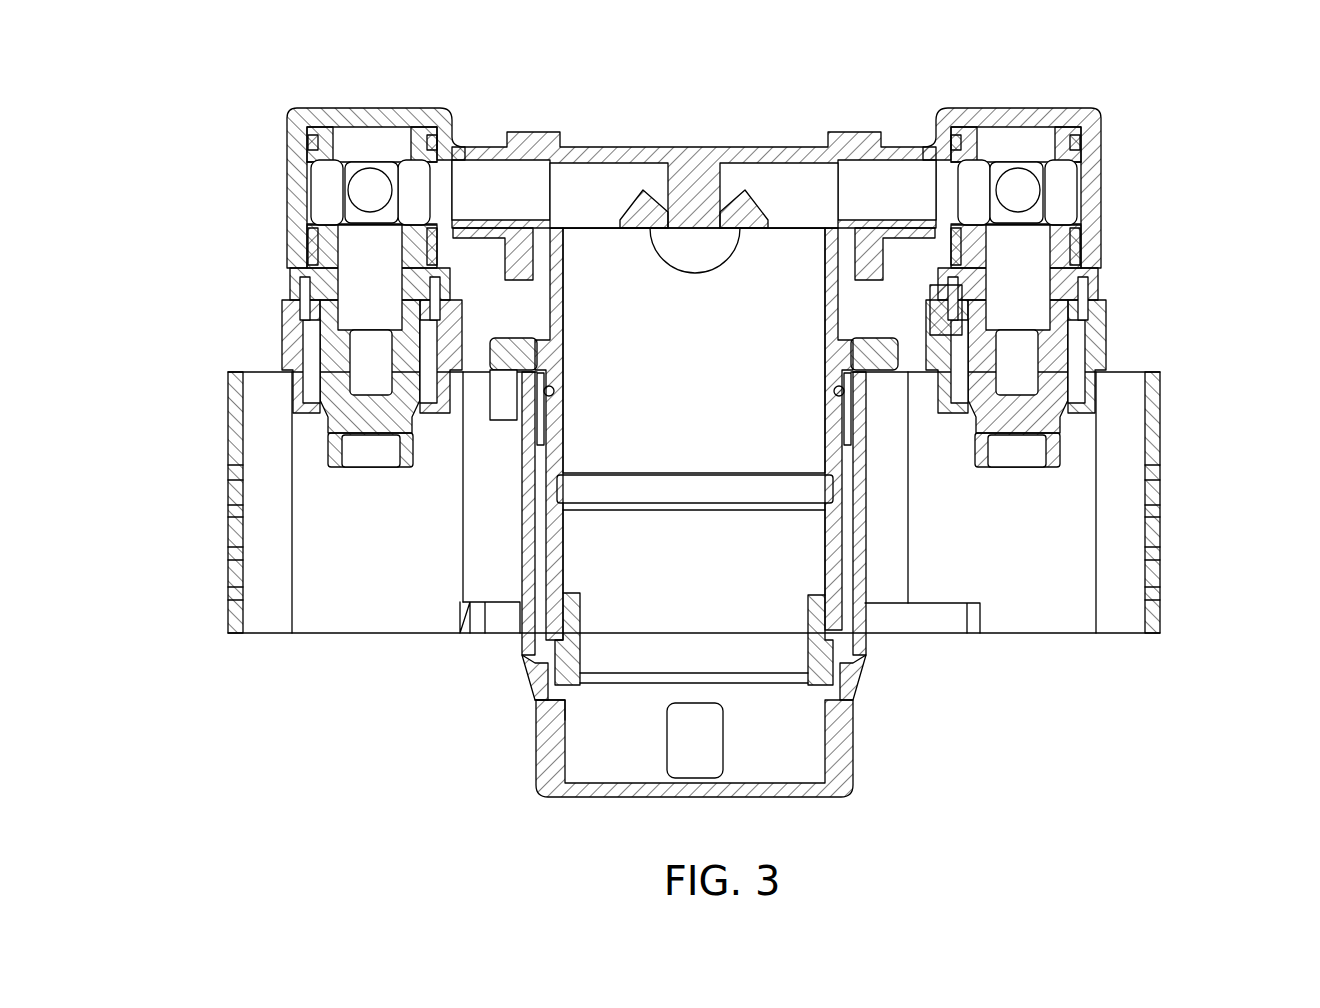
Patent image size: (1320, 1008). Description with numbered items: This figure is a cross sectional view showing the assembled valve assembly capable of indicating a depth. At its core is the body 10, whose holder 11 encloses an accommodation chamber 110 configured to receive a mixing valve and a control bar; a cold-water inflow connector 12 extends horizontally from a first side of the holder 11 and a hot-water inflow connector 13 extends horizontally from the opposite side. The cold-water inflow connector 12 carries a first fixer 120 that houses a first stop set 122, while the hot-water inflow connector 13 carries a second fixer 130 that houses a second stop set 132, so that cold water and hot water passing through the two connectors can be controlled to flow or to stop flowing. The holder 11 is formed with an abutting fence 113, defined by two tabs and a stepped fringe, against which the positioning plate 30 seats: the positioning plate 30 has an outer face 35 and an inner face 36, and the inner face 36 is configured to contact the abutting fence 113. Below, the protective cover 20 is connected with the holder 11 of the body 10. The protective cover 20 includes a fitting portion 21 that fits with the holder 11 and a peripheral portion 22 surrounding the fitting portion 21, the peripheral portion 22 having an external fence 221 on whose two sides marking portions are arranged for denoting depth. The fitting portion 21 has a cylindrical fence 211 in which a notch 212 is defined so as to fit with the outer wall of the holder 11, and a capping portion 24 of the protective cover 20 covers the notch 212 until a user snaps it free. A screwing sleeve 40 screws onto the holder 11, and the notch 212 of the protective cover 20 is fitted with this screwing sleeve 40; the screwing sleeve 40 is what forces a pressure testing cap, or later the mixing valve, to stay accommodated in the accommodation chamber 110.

The body 10 is at (735, 149).
The holder 11 is at (518, 262).
The accommodation chamber 110 is at (567, 280).
The abutting fence 113 is at (887, 338).
The cold-water inflow connector 12 is at (481, 140).
The first fixer 120 is at (290, 205).
The first stop set 122 is at (353, 468).
The hot-water inflow connector 13 is at (905, 132).
The second fixer 130 is at (1107, 196).
The second stop set 132 is at (1027, 468).
The protective cover 20 is at (1170, 575).
The fitting portion 21 is at (520, 562).
The cylindrical fence 211 is at (523, 585).
The notch 212 is at (545, 668).
The peripheral portion 22 is at (234, 490).
The external fence 221 is at (234, 418).
The capping portion 24 is at (805, 797).
The positioning plate 30 is at (898, 353).
The outer face 35 is at (505, 428).
The inner face 36 is at (622, 225).
The screwing sleeve 40 is at (846, 672).